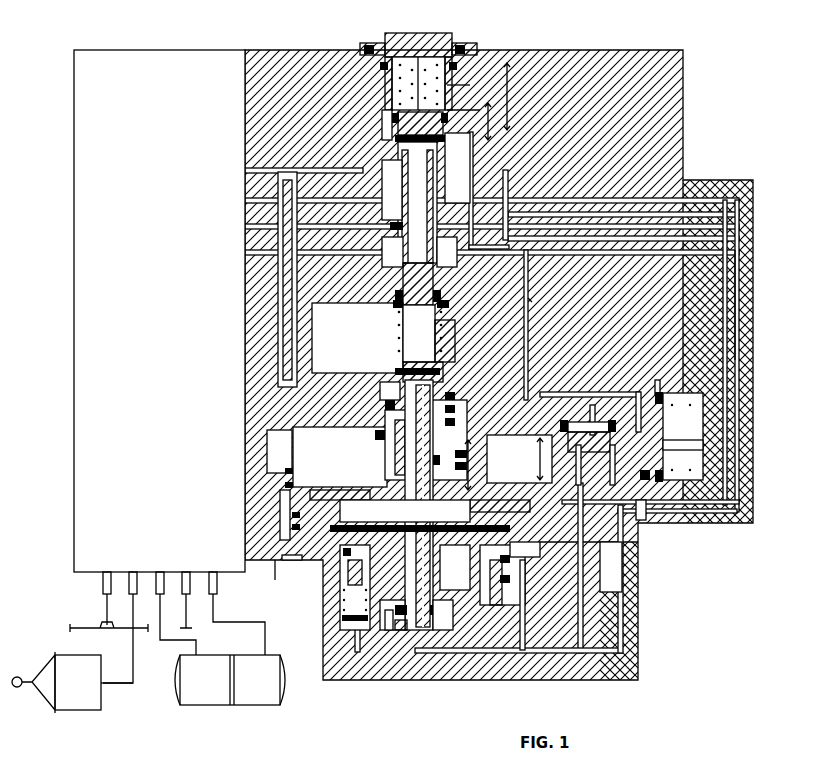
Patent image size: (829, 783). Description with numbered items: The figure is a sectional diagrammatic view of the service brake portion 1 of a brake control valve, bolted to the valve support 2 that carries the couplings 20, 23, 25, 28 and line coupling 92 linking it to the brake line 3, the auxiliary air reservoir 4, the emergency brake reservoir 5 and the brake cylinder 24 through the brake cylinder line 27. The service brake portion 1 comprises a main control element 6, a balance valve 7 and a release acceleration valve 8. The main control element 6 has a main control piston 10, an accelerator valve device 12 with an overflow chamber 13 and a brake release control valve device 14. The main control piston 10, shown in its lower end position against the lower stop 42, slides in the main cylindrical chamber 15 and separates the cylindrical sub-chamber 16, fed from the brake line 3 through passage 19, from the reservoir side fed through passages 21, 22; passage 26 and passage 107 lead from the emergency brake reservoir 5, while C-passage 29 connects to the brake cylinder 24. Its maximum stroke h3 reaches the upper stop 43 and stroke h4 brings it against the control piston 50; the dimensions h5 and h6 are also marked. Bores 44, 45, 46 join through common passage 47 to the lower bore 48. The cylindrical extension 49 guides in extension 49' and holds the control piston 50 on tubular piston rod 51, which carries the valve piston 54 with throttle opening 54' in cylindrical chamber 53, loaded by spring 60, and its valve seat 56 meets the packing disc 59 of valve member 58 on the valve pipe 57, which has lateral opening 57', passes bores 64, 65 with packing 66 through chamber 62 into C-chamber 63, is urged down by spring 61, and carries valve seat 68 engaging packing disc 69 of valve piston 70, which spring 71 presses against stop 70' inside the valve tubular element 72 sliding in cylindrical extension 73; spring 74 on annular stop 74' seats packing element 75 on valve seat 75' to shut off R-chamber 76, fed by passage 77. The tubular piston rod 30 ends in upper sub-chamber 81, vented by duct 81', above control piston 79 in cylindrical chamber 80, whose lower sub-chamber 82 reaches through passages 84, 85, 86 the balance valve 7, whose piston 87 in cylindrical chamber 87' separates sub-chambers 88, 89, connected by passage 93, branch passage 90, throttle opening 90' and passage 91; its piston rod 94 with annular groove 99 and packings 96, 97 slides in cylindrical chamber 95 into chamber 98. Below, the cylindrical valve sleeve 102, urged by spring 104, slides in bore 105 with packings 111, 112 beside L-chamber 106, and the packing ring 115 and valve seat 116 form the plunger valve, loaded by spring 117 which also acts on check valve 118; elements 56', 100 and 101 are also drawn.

The service brake portion 1 is at (545, 58).
The valve support 2 is at (150, 58).
The brake line 3 is at (86, 628).
The auxiliary air reservoir 4 is at (286, 690).
The emergency brake reservoir 5 is at (176, 690).
The main control element 6 is at (275, 580).
The balance valve 7 is at (705, 400).
The release acceleration valve 8 is at (372, 635).
The main control piston 10 is at (290, 398).
The accelerator valve device 12 is at (432, 445).
The overflow chamber 13 is at (357, 338).
The brake release control valve device 14 is at (384, 200).
The main cylindrical chamber 15 is at (268, 442).
The cylindrical sub-chamber 16 is at (340, 457).
The passage 19 is at (245, 200).
The coupling 20 is at (103, 588).
The passage 21 is at (740, 305).
The passage 22 is at (245, 252).
The coupling 23 is at (217, 588).
The brake cylinder 24 is at (42, 668).
The coupling 25 is at (158, 594).
The passage 26 is at (245, 226).
The brake cylinder line 27 is at (115, 682).
The coupling 28 is at (130, 594).
The C-passage 29 is at (245, 170).
The tubular piston rod 30 is at (432, 632).
The lower stop 42 is at (535, 558).
The upper stop 43 is at (385, 437).
The bore 44 is at (280, 470).
The bore 45 is at (280, 486).
The bore 46 is at (280, 502).
The common passage 47 is at (290, 515).
The lower bore 48 is at (292, 528).
The cylindrical extension 49 is at (474, 449).
The cylindrical extension 49' is at (477, 461).
The control piston 50 is at (412, 452).
The tubular piston rod 51 is at (446, 453).
The cylindrical chamber 53 is at (396, 380).
The valve piston 54 is at (471, 418).
The throttle opening 54' is at (369, 408).
The valve seat 56 is at (464, 392).
The seal 56' is at (468, 407).
The valve pipe 57 is at (395, 303).
The lateral opening 57' is at (414, 261).
The valve member 58 is at (396, 370).
The packing disc 59 is at (440, 368).
The spring 60 is at (450, 352).
The spring 61 is at (398, 325).
The chamber 62 is at (440, 270).
The C-chamber 63 is at (398, 160).
The bore 64 is at (398, 295).
The bore 65 is at (384, 235).
The packing 66 is at (448, 295).
The valve seat 68 is at (434, 185).
The packing disc 69 is at (384, 135).
The valve piston 70 is at (392, 123).
The stop 70' is at (394, 109).
The spring 71 is at (417, 58).
The valve tubular element 72 is at (390, 50).
The cylindrical extension 73 is at (458, 46).
The spring 74 is at (414, 60).
The annular stop 74' is at (472, 79).
The annular packing element 75 is at (384, 134).
The valve seat 75' is at (469, 116).
The R-chamber 76 is at (384, 80).
The passage 77 is at (476, 165).
The control piston 79 is at (432, 632).
The cylindrical chamber 80 is at (400, 632).
The upper sub-chamber 81 is at (392, 652).
The duct 81' is at (384, 669).
The lower sub-chamber 82 is at (445, 632).
The passage 84 is at (522, 654).
The passage 85 is at (622, 598).
The passage 86 is at (530, 300).
The piston 87 is at (683, 447).
The cylindrical chamber 87' is at (689, 513).
The sub-chamber 88 is at (692, 396).
The sub-chamber 89 is at (642, 522).
The branch passage 90 is at (590, 395).
The throttle opening 90' is at (659, 368).
The passage 91 is at (245, 275).
The line coupling 92 is at (188, 594).
The passage 93 is at (527, 345).
The piston rod 94 is at (580, 465).
The cylindrical chamber 95 is at (613, 465).
The packing 96 is at (611, 420).
The packing 97 is at (578, 424).
The chamber 98 is at (562, 420).
The annular groove 99 is at (598, 432).
The port 100 is at (290, 562).
The seal 101 is at (645, 478).
The cylindrical valve sleeve 102 is at (495, 520).
The spring 104 is at (405, 550).
The bore 105 is at (510, 578).
The L-chamber 106 is at (510, 563).
The passage 107 is at (582, 658).
The packing 111 is at (480, 598).
The packing 112 is at (472, 560).
The packing ring 115 is at (348, 595).
The valve seat 116 is at (343, 580).
The spring 117 is at (345, 605).
The check valve 118 is at (345, 620).
The maximum stroke h3 is at (519, 459).
The stroke h4 is at (476, 465).
The stroke h5 is at (496, 121).
The stroke h6 is at (516, 96).